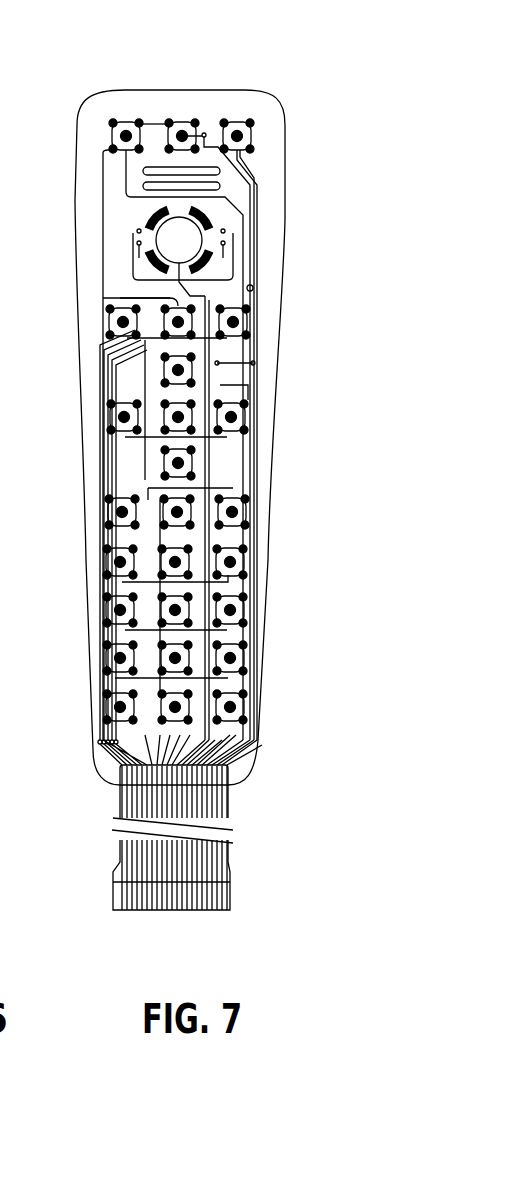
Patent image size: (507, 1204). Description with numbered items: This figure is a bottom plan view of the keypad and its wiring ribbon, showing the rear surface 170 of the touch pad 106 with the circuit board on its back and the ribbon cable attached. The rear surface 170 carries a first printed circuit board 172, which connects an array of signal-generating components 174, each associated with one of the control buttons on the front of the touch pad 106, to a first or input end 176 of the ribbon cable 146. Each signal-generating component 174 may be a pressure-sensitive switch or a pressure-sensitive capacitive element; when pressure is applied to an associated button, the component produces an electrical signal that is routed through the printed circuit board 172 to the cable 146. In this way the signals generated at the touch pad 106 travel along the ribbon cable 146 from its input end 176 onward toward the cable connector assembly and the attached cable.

The touch pad 106 is at (221, 78).
The first printed circuit board 172 is at (84, 357).
The signal-generating components 174 is at (268, 138).
The input end 176 is at (105, 767).
The rear surface 170 is at (242, 762).
The ribbon cable 146 is at (208, 867).